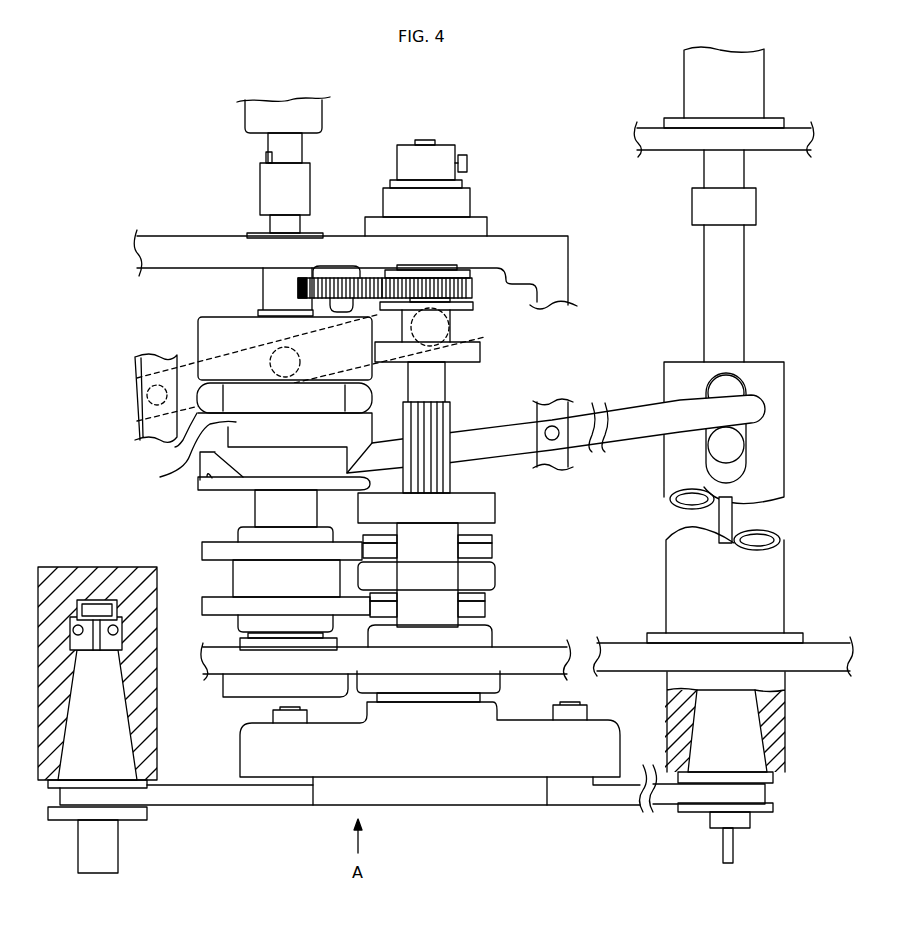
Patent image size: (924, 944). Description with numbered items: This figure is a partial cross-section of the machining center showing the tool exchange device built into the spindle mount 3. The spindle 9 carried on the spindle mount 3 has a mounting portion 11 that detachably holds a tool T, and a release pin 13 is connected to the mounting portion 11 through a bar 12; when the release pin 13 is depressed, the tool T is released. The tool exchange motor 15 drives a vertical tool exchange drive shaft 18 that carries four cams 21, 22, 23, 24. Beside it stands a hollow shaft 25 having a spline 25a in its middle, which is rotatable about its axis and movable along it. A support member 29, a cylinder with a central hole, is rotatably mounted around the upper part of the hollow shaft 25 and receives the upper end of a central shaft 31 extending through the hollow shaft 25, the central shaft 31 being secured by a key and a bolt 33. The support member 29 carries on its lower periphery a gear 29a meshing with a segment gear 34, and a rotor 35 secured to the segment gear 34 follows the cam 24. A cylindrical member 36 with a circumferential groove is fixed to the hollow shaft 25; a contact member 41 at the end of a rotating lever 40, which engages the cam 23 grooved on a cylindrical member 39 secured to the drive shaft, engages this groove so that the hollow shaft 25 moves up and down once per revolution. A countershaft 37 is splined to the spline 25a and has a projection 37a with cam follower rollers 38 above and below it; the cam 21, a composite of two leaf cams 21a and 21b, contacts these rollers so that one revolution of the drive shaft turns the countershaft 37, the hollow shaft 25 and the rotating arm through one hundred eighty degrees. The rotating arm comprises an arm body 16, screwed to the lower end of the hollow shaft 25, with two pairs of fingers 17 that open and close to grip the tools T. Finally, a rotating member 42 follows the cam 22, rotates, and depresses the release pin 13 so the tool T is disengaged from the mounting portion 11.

The spindle mount 3 is at (213, 647).
The spindle 9 is at (812, 585).
The mounting portion 11 is at (778, 723).
The bar 12 is at (726, 520).
The release pin 13 is at (735, 445).
The tool exchange motor 15 is at (248, 115).
The arm body 16 is at (437, 760).
The fingers 17 is at (210, 805).
The tool exchange drive shaft 18 is at (300, 228).
The cam 21 is at (247, 570).
The leaf cam 21a is at (210, 541).
The leaf cam 21b is at (267, 593).
The cam 22 is at (200, 489).
The cam 23 is at (187, 448).
The cam 24 is at (224, 308).
The hollow shaft 25 is at (456, 388).
The spline 25a is at (452, 478).
The support member 29 is at (450, 143).
The gear 29a is at (475, 300).
The central shaft 31 is at (427, 140).
The bolt 33 is at (468, 163).
The segment gear 34 is at (345, 278).
The rotor 35 is at (330, 300).
The cylindrical member 36 is at (481, 352).
The countershaft 37 is at (445, 533).
The projection 37a is at (495, 578).
The cam follower rollers 38 is at (492, 547).
The cylindrical member 39 is at (162, 477).
The rotating lever 40 is at (188, 362).
The contact member 41 is at (452, 328).
The rotating member 42 is at (621, 407).
The tool T is at (78, 850).